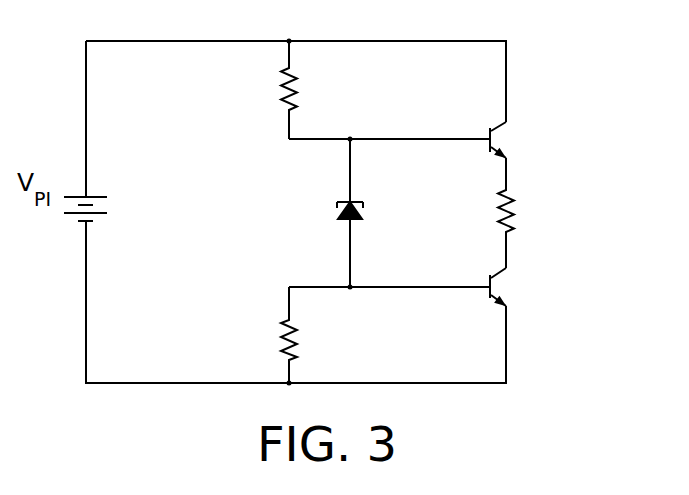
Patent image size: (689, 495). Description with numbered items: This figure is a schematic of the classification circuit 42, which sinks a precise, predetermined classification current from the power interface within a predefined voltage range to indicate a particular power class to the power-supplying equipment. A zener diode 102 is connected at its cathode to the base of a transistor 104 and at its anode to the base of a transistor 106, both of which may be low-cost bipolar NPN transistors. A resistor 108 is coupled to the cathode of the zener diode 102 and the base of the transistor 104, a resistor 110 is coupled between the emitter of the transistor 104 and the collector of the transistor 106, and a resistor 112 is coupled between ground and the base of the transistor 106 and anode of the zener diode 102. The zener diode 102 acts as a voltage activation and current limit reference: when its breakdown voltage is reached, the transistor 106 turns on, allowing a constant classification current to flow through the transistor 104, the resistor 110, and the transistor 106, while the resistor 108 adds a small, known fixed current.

The classification circuit 42 is at (580, 45).
The zener diode 102 is at (370, 205).
The transistor 104 is at (510, 137).
The transistor 106 is at (512, 283).
The resistor 108 is at (306, 78).
The resistor 110 is at (520, 203).
The resistor 112 is at (308, 332).